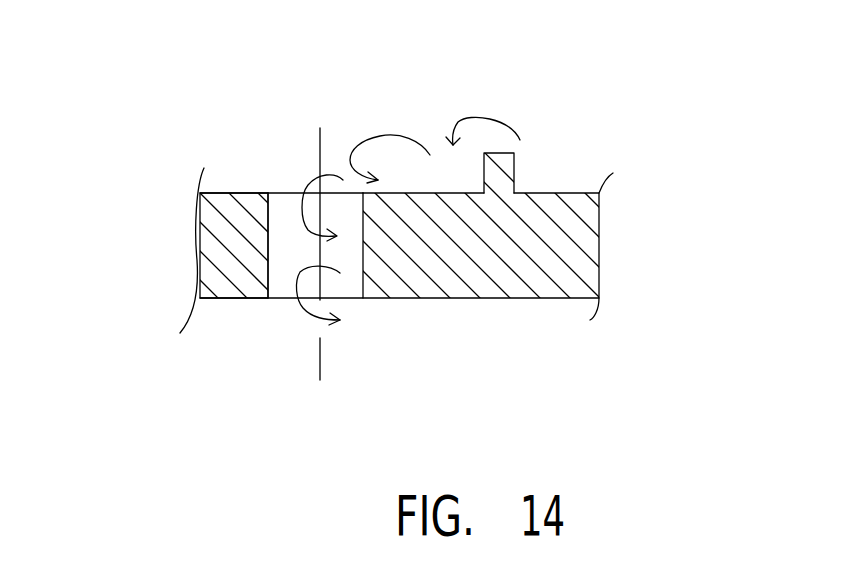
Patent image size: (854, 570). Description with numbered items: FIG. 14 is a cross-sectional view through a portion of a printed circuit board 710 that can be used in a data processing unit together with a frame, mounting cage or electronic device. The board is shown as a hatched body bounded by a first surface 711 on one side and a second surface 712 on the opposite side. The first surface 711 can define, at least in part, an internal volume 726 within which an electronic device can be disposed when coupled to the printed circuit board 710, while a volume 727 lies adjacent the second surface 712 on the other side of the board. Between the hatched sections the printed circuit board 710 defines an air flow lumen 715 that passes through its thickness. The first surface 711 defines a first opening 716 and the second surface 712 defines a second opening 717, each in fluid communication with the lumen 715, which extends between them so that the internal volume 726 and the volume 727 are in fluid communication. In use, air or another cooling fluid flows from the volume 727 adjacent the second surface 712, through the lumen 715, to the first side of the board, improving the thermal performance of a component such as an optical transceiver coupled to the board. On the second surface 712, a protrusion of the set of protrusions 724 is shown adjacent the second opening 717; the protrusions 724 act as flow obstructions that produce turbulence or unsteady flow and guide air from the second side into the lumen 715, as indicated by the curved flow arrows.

The printed circuit board 710 is at (249, 72).
The first surface 711 is at (231, 298).
The second surface 712 is at (515, 153).
The air flow lumen 715 is at (290, 252).
The first opening 716 is at (288, 298).
The second opening 717 is at (292, 193).
The protrusions 724 is at (500, 165).
The internal volume 726 is at (460, 409).
The volume adjacent the second surface 727 is at (402, 65).